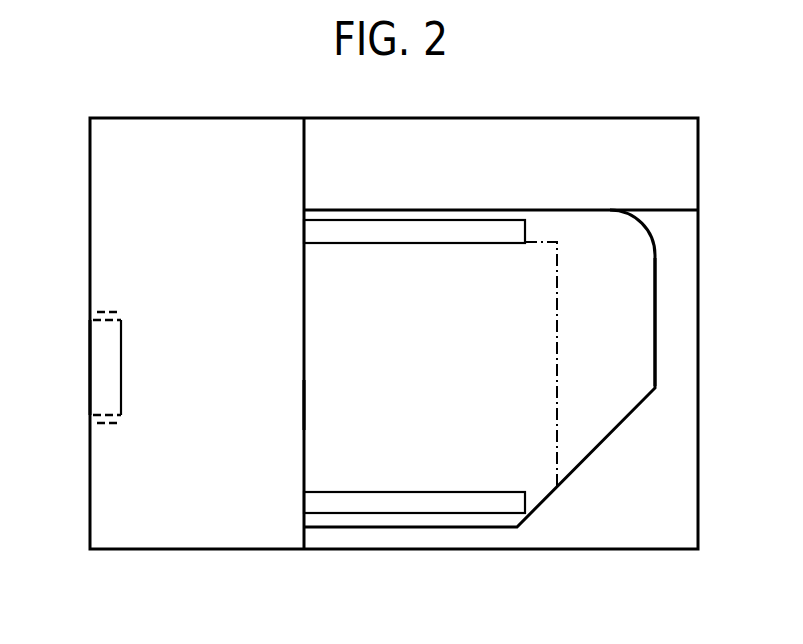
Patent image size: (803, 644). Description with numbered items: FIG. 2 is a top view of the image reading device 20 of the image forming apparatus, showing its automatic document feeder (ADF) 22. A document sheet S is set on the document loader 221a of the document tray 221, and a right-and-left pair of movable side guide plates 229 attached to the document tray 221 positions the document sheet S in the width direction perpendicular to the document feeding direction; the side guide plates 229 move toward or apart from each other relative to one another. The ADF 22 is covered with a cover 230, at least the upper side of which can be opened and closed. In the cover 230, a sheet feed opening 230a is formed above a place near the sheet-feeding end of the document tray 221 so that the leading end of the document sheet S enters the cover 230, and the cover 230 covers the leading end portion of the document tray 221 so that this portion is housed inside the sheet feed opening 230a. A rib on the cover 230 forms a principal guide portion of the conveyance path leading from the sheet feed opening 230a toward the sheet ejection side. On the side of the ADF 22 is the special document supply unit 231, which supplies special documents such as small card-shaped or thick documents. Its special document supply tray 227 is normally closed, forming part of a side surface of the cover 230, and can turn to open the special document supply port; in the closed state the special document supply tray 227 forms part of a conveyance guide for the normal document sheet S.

The image reading device 20 is at (645, 548).
The automatic document feeder (ADF) 22 is at (88, 134).
The document tray 221 is at (655, 332).
The document loader 221a is at (645, 290).
The special document supply tray 227 is at (90, 372).
The side guide plates 229 is at (437, 222).
The cover 230 is at (218, 546).
The sheet feed opening 230a is at (305, 405).
The special document supply unit 231 is at (84, 394).
The document sheet S is at (559, 360).